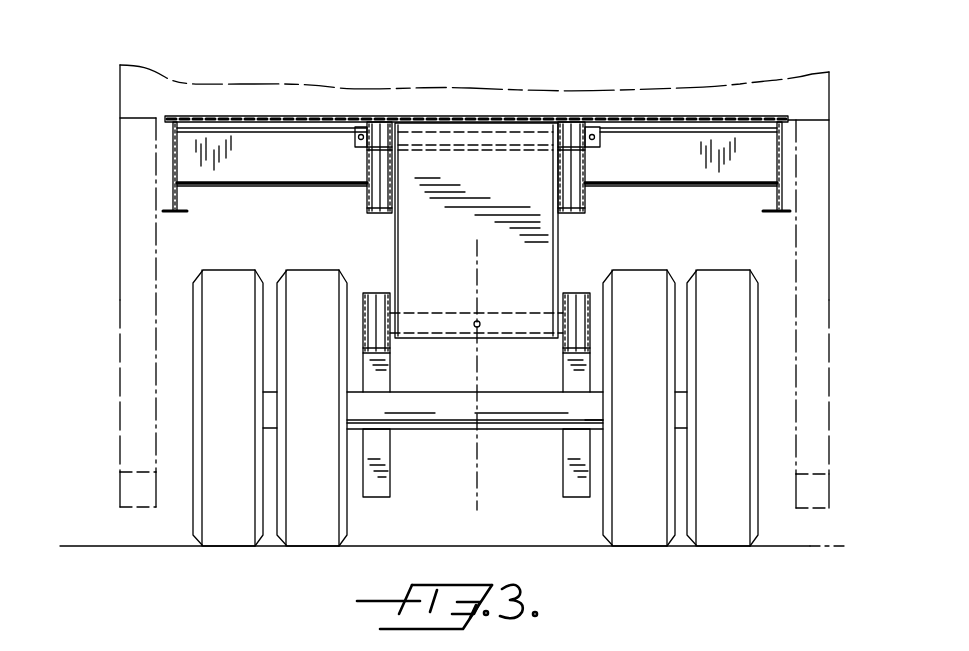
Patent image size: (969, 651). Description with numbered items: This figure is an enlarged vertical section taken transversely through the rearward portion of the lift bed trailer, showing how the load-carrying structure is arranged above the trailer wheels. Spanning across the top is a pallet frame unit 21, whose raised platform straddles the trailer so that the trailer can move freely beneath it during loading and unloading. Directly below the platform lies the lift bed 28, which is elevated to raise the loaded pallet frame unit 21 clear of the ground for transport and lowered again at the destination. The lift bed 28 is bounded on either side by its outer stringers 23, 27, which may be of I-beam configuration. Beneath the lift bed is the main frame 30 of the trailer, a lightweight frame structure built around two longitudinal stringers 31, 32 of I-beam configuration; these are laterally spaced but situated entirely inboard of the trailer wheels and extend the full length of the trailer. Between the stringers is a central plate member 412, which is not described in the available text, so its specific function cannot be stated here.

The pallet frame unit 21 is at (735, 82).
The outer stringer of the lift bed 23 is at (172, 198).
The outer stringer of the lift bed 27 is at (781, 202).
The lift bed 28 is at (231, 196).
The main frame 30 is at (579, 288).
The longitudinal stringer 31 is at (375, 498).
The longitudinal stringer 32 is at (575, 498).
The mounting plate 412 is at (395, 252).